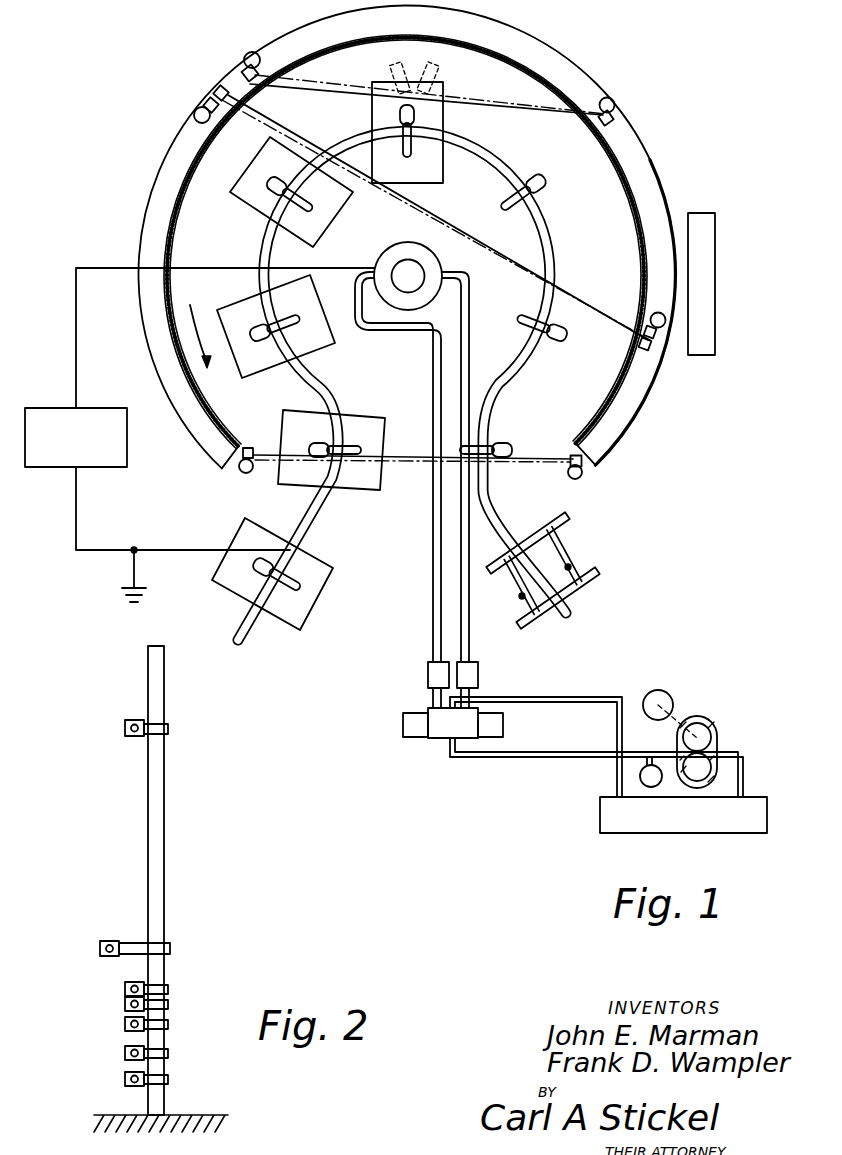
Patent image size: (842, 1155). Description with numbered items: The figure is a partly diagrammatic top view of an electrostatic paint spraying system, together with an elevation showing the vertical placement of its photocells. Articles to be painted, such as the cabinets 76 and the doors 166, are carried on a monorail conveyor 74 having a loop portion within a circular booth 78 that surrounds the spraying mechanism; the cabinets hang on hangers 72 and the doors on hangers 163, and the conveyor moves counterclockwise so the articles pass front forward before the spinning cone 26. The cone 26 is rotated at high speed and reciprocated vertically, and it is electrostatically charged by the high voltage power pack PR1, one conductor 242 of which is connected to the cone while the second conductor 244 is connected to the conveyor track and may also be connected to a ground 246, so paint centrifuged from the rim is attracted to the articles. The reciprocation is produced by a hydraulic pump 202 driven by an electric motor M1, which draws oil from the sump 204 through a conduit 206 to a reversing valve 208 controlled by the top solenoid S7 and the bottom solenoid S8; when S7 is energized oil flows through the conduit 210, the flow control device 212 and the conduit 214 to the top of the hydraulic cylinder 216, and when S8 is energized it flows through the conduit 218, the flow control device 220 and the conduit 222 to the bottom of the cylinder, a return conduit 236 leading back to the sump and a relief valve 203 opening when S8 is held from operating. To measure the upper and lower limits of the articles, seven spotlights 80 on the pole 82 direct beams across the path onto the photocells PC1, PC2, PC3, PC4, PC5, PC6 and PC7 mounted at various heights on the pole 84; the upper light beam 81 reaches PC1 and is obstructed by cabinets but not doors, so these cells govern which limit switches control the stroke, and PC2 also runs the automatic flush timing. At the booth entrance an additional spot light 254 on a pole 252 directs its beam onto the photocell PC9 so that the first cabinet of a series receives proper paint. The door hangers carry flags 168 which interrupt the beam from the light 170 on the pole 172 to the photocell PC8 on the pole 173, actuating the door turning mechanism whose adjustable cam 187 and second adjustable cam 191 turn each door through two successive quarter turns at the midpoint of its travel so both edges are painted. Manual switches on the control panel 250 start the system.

In FIG. 1, the cone 26 is at (398, 248).
In FIG. 1, the hangers 72 is at (505, 443).
In FIG. 1, the monorail conveyor 74 is at (503, 497).
In FIG. 1, the cabinets 76 is at (372, 100).
In FIG. 1, the circular booth 78 is at (538, 66).
In FIG. 1, the spotlights 80 is at (655, 345).
In FIG. 1, the light beam 81 is at (437, 218).
In FIG. 1, the pole 82 is at (665, 322).
In FIG. 1, the pole 84 is at (194, 115).
In FIG. 2, the pole 84 is at (160, 800).
In FIG. 1, the hangers 163 is at (572, 552).
In FIG. 1, the doors 166 is at (565, 520).
In FIG. 1, the flags 168 is at (572, 568).
In FIG. 1, the light 170 is at (615, 119).
In FIG. 1, the pole 172 is at (609, 98).
In FIG. 1, the pole 173 is at (256, 53).
In FIG. 1, the adjustable cam 187 is at (440, 66).
In FIG. 1, the second adjustable cam 191 is at (393, 68).
In FIG. 1, the hydraulic pump 202 is at (712, 722).
In FIG. 1, the relief valve 203 is at (640, 776).
In FIG. 1, the sump 204 is at (600, 815).
In FIG. 1, the conduit 206 is at (530, 757).
In FIG. 1, the reversing valve 208 is at (443, 738).
In FIG. 1, the conduit 210 is at (469, 697).
In FIG. 1, the flow control device 212 is at (478, 672).
In FIG. 1, the conduit 214 is at (467, 375).
In FIG. 1, the hydraulic cylinder 216 is at (418, 272).
In FIG. 1, the conduit 218 is at (433, 697).
In FIG. 1, the flow control device 220 is at (428, 672).
In FIG. 1, the conduit 222 is at (437, 528).
In FIG. 1, the return conduit 236 is at (622, 697).
In FIG. 1, the conductor 242 is at (76, 268).
In FIG. 1, the conductor 244 is at (76, 548).
In FIG. 1, the ground 246 is at (130, 592).
In FIG. 1, the control panel 250 is at (713, 278).
In FIG. 1, the pole 252 is at (583, 472).
In FIG. 1, the spot light 254 is at (583, 457).
In FIG. 1, the photocell PC1 is at (207, 103).
In FIG. 2, the photocell PC1 is at (125, 728).
In FIG. 1, the photocell PC2 is at (219, 88).
In FIG. 2, the photocell PC2 is at (100, 948).
In FIG. 2, the photocell PC3 is at (125, 989).
In FIG. 2, the photocell PC4 is at (125, 1004).
In FIG. 2, the photocell PC5 is at (125, 1024).
In FIG. 2, the photocell PC6 is at (125, 1053).
In FIG. 2, the photocell PC7 is at (125, 1079).
In FIG. 1, the photocell PC8 is at (248, 66).
In FIG. 1, the photocell PC9 is at (248, 448).
In FIG. 1, the high voltage direct current power pack unit PR1 is at (100, 467).
In FIG. 1, the top solenoid S7 is at (503, 725).
In FIG. 1, the bottom solenoid S8 is at (403, 725).
In FIG. 1, the electric motor M1 is at (665, 695).